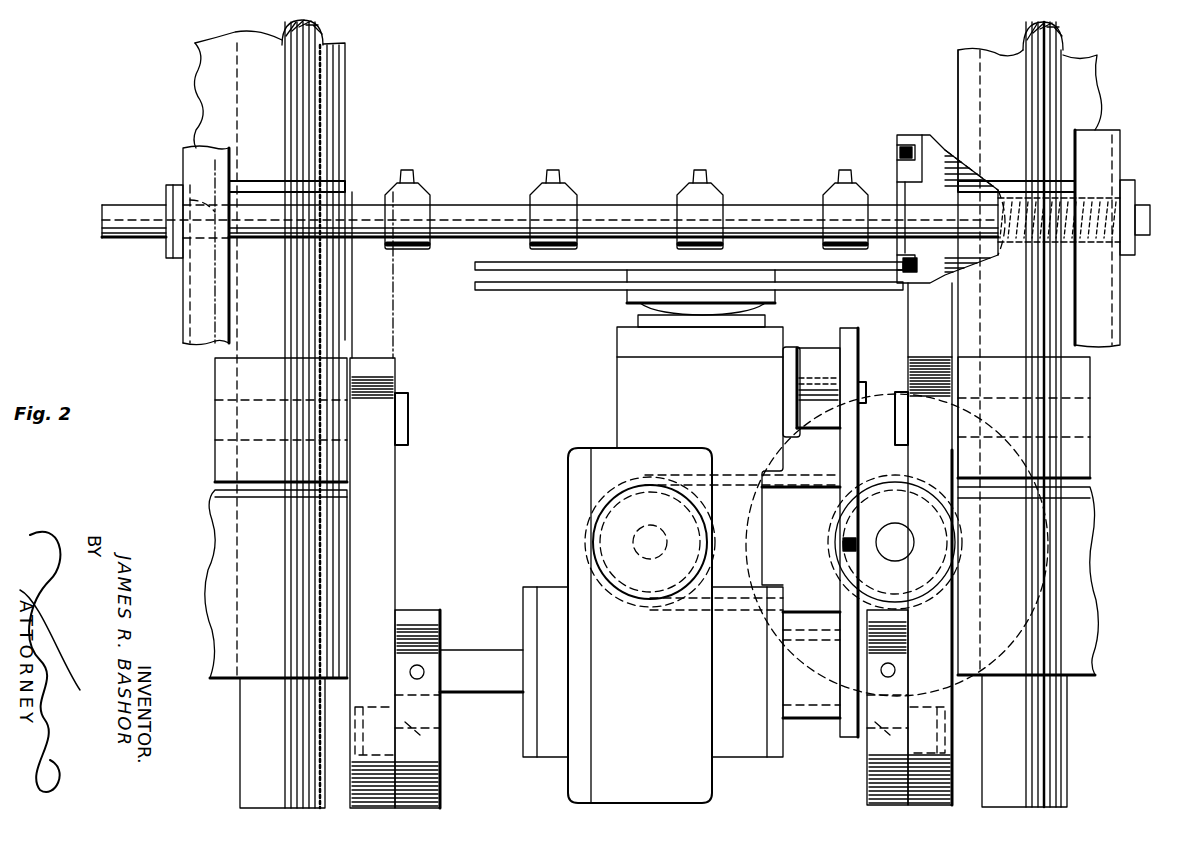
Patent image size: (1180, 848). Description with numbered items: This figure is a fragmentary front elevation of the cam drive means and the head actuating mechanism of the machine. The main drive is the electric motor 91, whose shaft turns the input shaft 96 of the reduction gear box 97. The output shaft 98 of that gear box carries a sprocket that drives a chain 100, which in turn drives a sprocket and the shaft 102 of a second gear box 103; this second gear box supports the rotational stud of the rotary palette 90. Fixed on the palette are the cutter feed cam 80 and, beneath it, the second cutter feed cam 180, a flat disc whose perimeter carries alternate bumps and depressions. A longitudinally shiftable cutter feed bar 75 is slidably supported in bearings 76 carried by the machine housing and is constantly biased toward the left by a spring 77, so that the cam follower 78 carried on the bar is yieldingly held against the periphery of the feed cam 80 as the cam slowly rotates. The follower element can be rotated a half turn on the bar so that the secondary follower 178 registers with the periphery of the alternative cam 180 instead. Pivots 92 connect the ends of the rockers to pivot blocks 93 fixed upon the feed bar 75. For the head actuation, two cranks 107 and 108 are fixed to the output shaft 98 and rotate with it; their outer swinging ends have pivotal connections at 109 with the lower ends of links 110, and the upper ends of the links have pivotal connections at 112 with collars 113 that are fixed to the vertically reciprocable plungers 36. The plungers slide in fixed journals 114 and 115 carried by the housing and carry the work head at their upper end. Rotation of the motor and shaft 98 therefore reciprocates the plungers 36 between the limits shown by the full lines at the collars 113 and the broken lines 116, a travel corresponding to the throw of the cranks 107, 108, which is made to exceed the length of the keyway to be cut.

The vertically reciprocable plunger 36 is at (253, 716).
The cutter feed bar 75 is at (757, 205).
The bearing 76 is at (1128, 185).
The spring 77 is at (1118, 262).
The cam follower 78 is at (905, 274).
The cutter feed cam 80 is at (815, 262).
The rotary palette 90 is at (645, 318).
The electric motor 91 is at (781, 447).
The pivot 92 is at (411, 171).
The pivot block 93 is at (428, 197).
The input shaft 96 is at (645, 530).
The reduction gear box 97 is at (605, 711).
The output shaft 98 is at (483, 660).
The chain 100 is at (845, 450).
The shaft 102 is at (866, 390).
The second gear box 103 is at (630, 387).
The crank 107 is at (435, 712).
The crank 108 is at (880, 712).
The pivotal connection 109 is at (442, 743).
The link 110 is at (396, 565).
The pivotal connection 112 is at (403, 445).
The collar 113 is at (222, 372).
The fixed journal 114 is at (212, 566).
The fixed journal 115 is at (210, 103).
The broken-line limit position 116 is at (180, 192).
The secondary follower 178 is at (900, 150).
The second cutter feed cam 180 is at (813, 282).